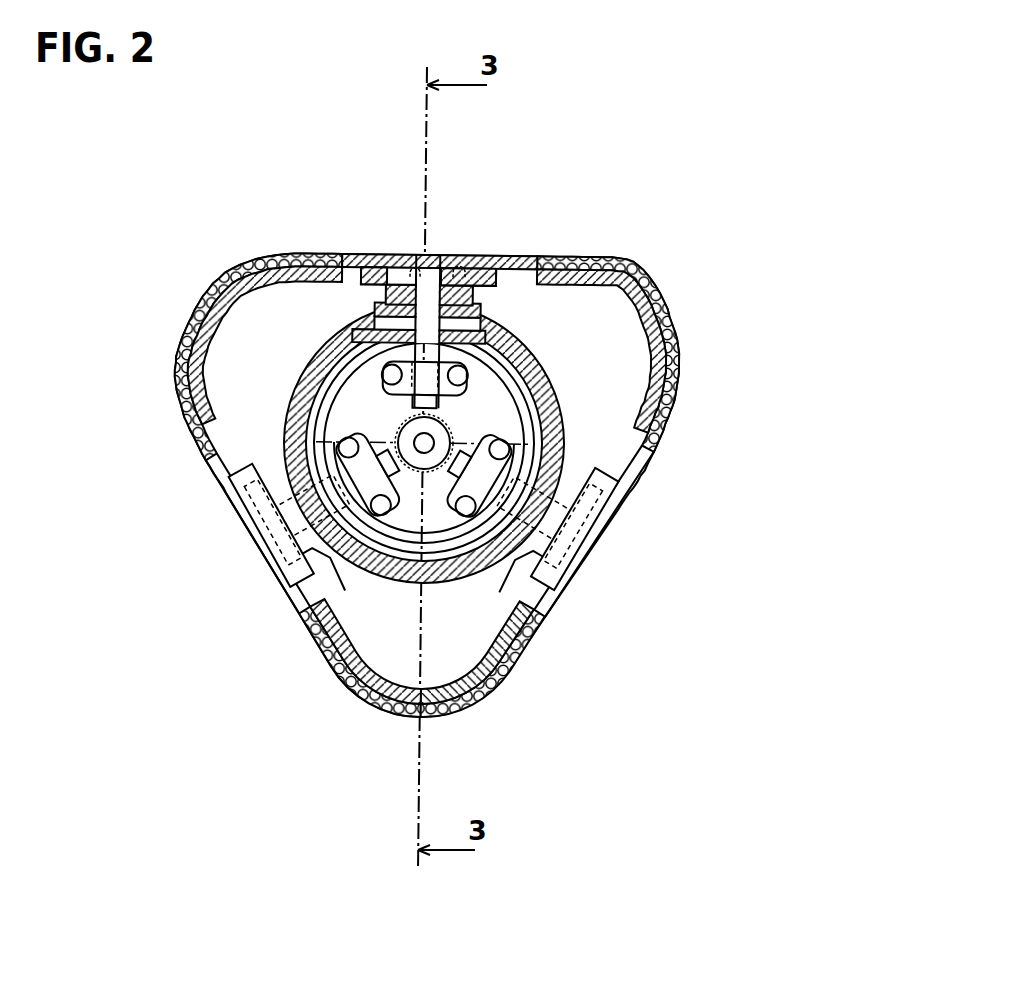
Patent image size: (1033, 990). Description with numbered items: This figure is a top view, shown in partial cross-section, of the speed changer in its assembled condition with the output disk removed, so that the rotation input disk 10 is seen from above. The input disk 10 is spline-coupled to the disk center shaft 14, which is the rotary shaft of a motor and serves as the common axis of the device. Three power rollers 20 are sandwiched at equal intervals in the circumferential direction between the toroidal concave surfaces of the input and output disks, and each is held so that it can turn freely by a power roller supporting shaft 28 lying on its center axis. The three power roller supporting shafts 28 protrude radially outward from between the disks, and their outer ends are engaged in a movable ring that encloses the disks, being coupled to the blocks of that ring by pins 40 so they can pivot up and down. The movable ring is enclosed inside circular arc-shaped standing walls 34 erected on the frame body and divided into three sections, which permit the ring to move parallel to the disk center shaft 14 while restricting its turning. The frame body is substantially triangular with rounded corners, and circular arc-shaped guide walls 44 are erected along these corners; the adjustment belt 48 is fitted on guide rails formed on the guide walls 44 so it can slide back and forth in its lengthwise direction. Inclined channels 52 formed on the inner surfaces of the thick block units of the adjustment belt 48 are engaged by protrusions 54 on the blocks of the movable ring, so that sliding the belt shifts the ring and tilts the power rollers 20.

The rotation input disk 10 is at (672, 388).
The disk center shaft 14 is at (440, 532).
The power roller 20 is at (655, 432).
The power roller supporting shaft 28 is at (410, 583).
The standing wall 34 is at (676, 338).
The pin 40 is at (498, 320).
The guide wall 44 is at (662, 298).
The adjustment belt 48 is at (607, 518).
The inclined channel 52 is at (467, 253).
The protrusion 54 is at (398, 250).